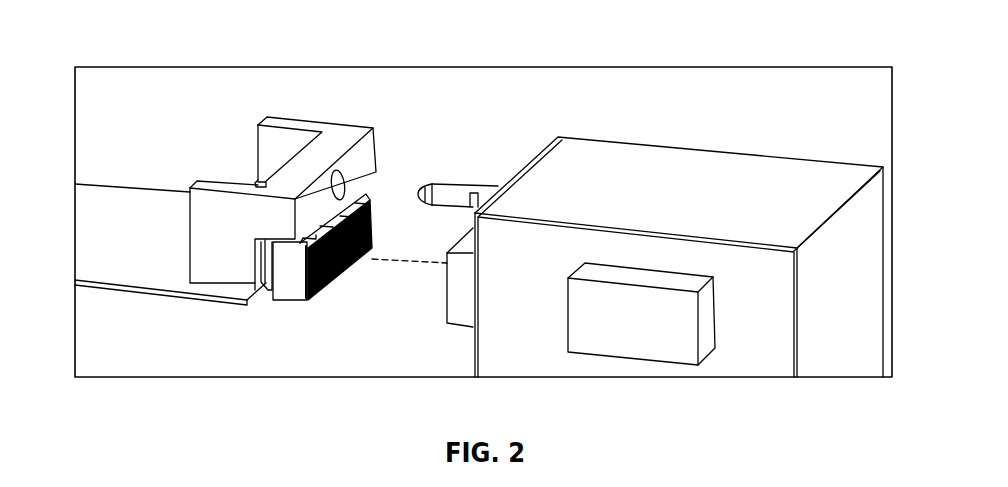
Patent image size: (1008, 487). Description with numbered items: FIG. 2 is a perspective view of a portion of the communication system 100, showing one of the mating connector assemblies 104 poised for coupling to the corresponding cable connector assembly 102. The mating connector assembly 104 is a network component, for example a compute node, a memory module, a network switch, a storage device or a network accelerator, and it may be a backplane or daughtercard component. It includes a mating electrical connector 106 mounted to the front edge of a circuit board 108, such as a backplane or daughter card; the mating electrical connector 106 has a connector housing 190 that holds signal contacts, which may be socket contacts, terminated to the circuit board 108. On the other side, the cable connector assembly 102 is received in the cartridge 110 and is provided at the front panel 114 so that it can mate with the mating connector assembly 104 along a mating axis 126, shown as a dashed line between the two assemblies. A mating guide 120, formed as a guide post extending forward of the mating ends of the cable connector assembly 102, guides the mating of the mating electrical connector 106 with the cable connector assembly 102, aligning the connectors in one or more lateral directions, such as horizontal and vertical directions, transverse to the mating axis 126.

The communication system 100 is at (508, 44).
The cable connector assembly 102 is at (432, 303).
The mating connector assembly 104 is at (168, 118).
The mating electrical connector 106 is at (328, 284).
The circuit board 108 is at (118, 272).
The cartridge 110 is at (680, 178).
The front panel 114 is at (476, 360).
The mating guide 120 is at (447, 193).
The mating axis 126 is at (414, 265).
The connector housing 190 is at (292, 285).